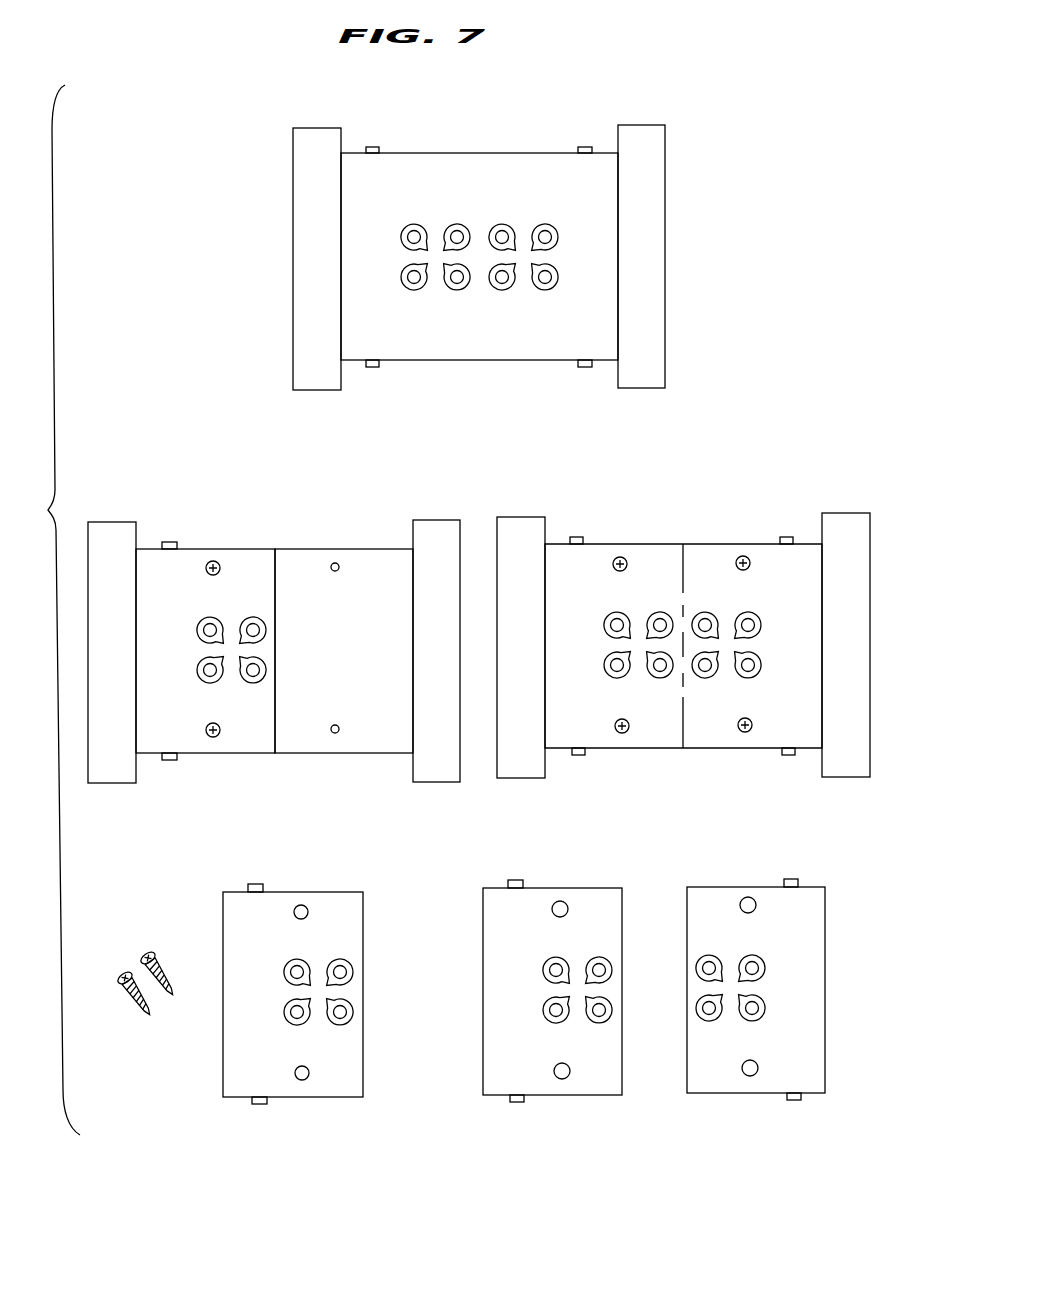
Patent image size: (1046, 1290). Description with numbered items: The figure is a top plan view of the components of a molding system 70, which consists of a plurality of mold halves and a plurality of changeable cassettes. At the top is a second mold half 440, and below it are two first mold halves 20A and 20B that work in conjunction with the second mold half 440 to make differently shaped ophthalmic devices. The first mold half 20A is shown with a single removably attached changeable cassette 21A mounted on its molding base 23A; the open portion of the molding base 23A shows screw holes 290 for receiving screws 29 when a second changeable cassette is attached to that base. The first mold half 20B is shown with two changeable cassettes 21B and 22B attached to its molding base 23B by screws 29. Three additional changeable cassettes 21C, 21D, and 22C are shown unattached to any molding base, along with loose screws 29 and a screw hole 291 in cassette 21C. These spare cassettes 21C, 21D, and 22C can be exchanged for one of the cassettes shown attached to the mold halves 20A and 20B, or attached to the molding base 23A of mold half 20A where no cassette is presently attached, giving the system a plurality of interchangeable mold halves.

The molding system 70 is at (50, 610).
The second mold half 440 is at (650, 233).
The first mold half 20A is at (113, 538).
The first mold half 20B is at (527, 528).
The changeable cassette 21A is at (243, 738).
The changeable cassette 21B is at (640, 735).
The changeable cassette 21C is at (330, 1085).
The changeable cassette 21D is at (540, 1080).
The changeable cassette 22B is at (709, 733).
The changeable cassette 22C is at (725, 1078).
The molding base 23A is at (428, 760).
The molding base 23B is at (842, 760).
The screws 29 is at (163, 997).
The screw holes 290 is at (335, 562).
The screw hole 291 is at (305, 905).